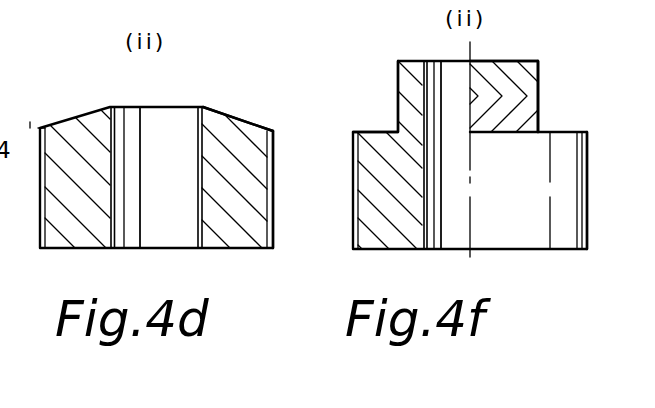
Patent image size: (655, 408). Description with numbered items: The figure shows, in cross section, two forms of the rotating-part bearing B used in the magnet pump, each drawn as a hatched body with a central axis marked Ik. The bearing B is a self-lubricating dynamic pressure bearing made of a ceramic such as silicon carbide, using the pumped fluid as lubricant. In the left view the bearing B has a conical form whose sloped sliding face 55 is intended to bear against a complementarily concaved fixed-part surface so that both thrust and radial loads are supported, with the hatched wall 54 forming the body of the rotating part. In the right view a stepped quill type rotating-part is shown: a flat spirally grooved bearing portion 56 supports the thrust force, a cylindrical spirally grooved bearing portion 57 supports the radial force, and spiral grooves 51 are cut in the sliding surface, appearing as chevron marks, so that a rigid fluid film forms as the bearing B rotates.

In FIG. 4f, the spiral grooves 51 is at (523, 77).
In FIG. 4d, the hatched sleeve body 54 is at (274, 148).
In FIG. 4f, the hatched sleeve body 54 is at (353, 238).
In FIG. 4d, the tapered end surface 55 is at (248, 119).
In FIG. 4f, the flat spirally grooved bearing portion 56 is at (372, 131).
In FIG. 4f, the cylindrical spirally grooved bearing portion 57 is at (539, 97).
In FIG. 4d, the bearing B is at (275, 203).
In FIG. 4f, the bearing B is at (588, 226).
In FIG. 4d, the inner axial length Ik is at (151, 177).
In FIG. 4f, the inner axial length Ik is at (451, 155).